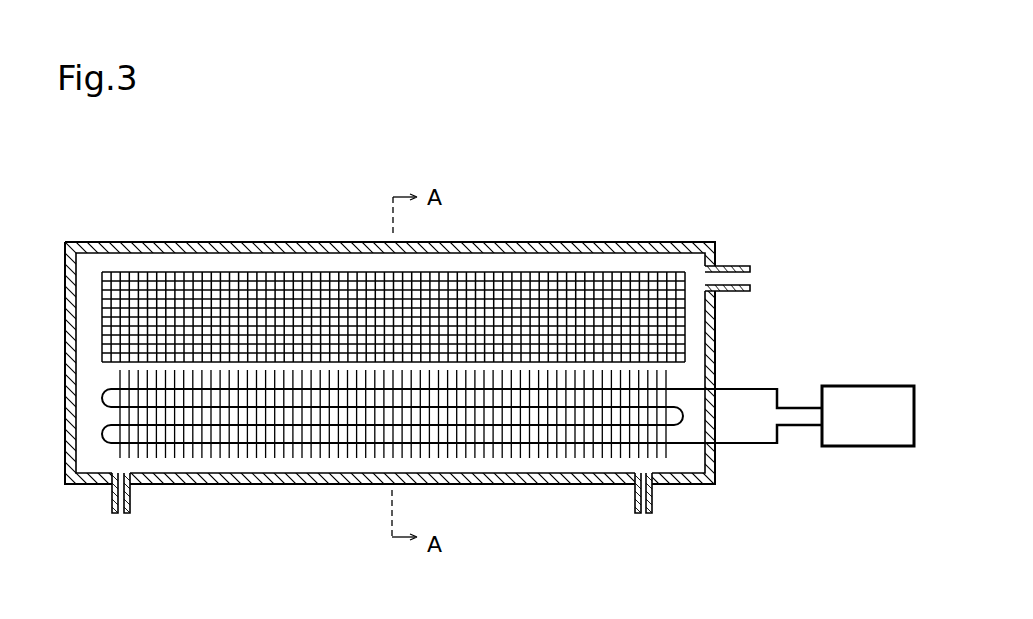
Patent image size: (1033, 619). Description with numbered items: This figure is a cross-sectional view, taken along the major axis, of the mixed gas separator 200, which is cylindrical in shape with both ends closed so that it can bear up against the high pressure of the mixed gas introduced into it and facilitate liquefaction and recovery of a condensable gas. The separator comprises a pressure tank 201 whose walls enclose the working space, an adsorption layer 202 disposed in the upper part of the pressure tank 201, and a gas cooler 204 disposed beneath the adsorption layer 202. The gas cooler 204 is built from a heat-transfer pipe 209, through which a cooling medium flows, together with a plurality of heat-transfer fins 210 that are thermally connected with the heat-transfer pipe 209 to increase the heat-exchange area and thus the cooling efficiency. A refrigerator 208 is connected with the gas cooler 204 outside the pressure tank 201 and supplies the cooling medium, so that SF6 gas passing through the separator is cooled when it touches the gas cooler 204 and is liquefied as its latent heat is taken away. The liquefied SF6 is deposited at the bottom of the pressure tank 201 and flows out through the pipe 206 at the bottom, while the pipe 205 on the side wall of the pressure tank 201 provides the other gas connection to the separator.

The mixed gas separator 200 is at (589, 206).
The pressure tank 201 is at (321, 243).
The adsorption layer 202 is at (460, 273).
The gas cooler 204 is at (565, 462).
The pipe 205 is at (731, 265).
The pipe 206 is at (132, 512).
The refrigerator 208 is at (846, 386).
The heat-transfer pipe 209 is at (742, 444).
The heat-transfer fins 210 is at (290, 460).